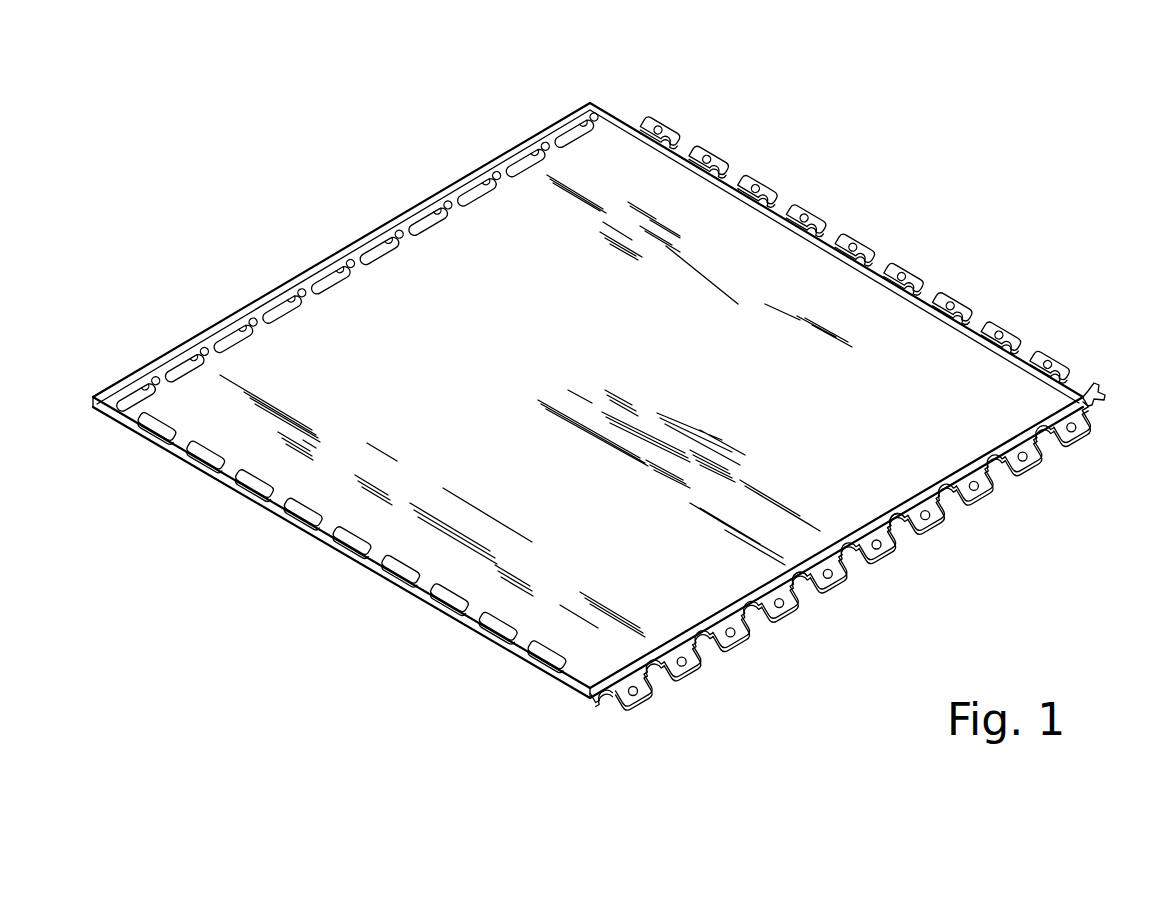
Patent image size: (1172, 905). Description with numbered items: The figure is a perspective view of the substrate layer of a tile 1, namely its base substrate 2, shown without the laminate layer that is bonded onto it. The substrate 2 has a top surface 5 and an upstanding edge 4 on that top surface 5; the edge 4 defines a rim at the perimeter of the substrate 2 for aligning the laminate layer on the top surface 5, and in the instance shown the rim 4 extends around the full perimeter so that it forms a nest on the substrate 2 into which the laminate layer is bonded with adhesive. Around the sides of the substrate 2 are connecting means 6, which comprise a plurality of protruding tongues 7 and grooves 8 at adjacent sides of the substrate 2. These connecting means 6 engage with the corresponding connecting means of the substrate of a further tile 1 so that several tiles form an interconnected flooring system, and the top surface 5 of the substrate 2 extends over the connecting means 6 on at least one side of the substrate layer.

The tile 1 is at (810, 128).
The base substrate 2 is at (400, 290).
The upstanding edge 4 is at (913, 297).
The top surface 5 is at (770, 394).
The connecting means 6 is at (1003, 488).
The plurality of protruding tongues 7 is at (890, 548).
The grooves 8 is at (851, 558).